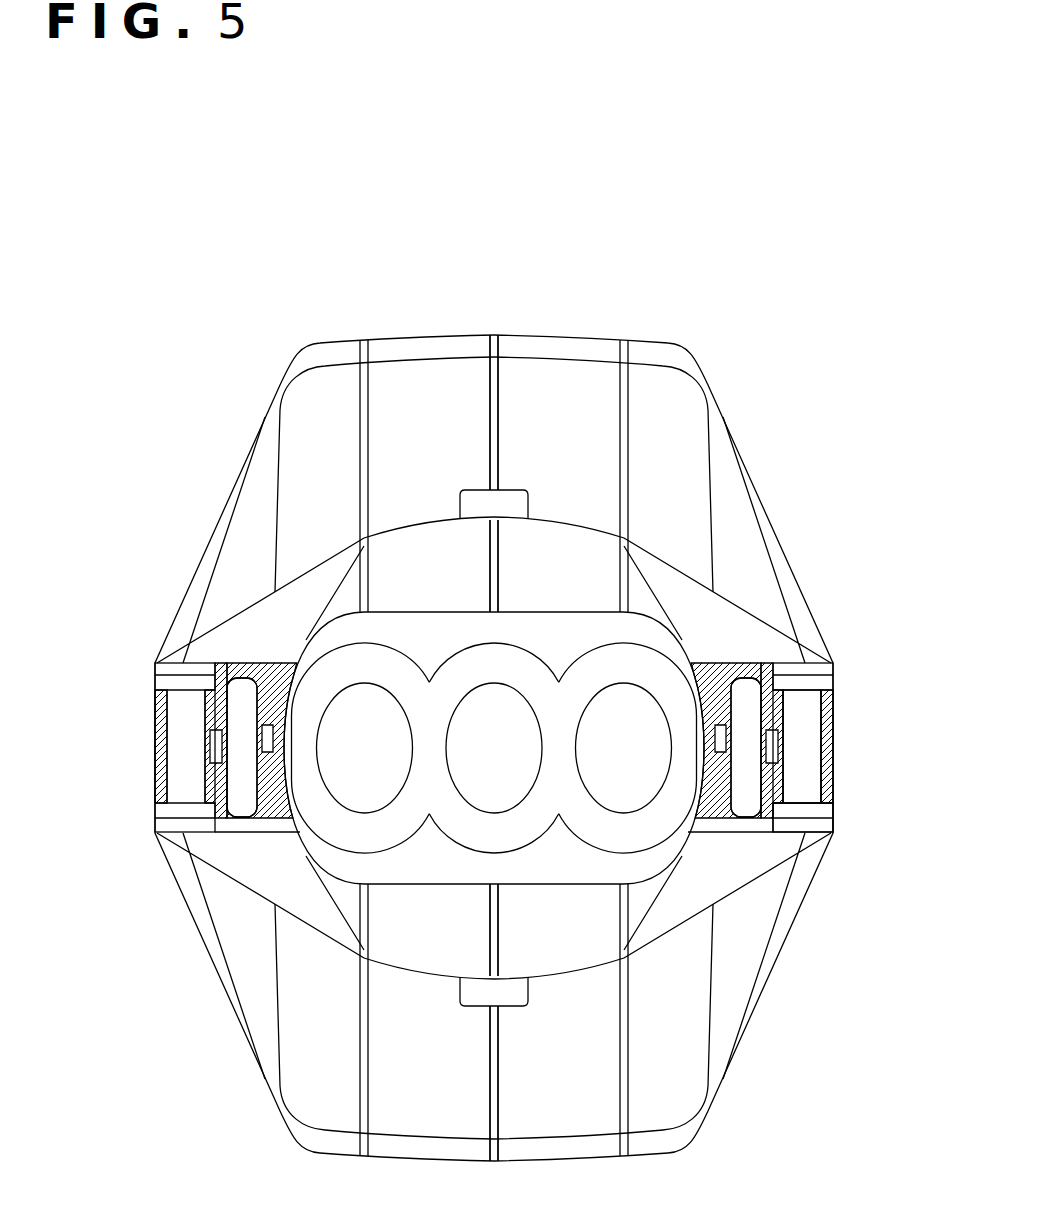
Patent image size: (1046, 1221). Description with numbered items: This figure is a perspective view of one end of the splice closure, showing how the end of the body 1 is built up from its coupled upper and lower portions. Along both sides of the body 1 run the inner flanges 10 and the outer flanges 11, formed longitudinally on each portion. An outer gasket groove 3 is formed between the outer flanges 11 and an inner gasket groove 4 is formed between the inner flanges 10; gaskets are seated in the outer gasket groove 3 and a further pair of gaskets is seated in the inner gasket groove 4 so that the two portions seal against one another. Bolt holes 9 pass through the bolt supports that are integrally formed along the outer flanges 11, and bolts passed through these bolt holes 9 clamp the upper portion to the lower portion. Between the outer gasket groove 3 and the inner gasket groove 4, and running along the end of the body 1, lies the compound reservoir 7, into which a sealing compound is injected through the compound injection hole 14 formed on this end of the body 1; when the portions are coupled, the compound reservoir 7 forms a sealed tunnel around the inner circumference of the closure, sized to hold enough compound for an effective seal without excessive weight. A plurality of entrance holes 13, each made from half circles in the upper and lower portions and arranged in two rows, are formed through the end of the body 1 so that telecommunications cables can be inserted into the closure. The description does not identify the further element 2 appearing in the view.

The body 1 is at (307, 1087).
The inner wall 2 is at (730, 985).
The outer gasket groove 3 is at (215, 754).
The inner gasket groove 4 is at (232, 663).
The compound reservoir 7 is at (243, 797).
The bolt holes 9 is at (805, 775).
The inner flanges 10 is at (763, 833).
The outer flanges 11 is at (782, 710).
The entrance holes 13 is at (370, 785).
The compound injection hole 14 is at (500, 488).